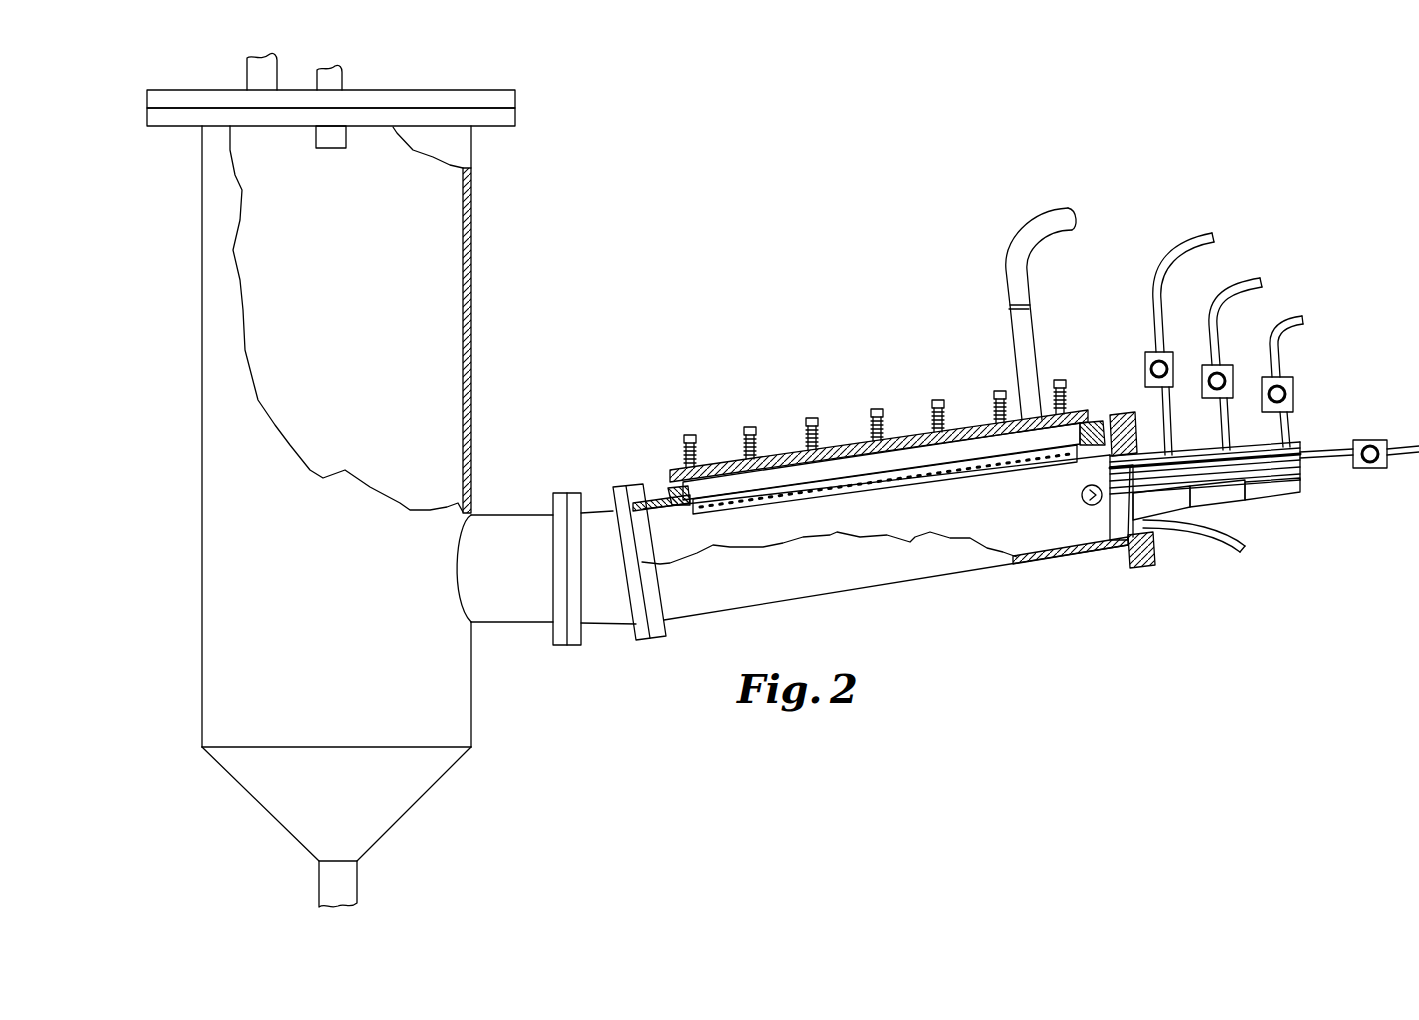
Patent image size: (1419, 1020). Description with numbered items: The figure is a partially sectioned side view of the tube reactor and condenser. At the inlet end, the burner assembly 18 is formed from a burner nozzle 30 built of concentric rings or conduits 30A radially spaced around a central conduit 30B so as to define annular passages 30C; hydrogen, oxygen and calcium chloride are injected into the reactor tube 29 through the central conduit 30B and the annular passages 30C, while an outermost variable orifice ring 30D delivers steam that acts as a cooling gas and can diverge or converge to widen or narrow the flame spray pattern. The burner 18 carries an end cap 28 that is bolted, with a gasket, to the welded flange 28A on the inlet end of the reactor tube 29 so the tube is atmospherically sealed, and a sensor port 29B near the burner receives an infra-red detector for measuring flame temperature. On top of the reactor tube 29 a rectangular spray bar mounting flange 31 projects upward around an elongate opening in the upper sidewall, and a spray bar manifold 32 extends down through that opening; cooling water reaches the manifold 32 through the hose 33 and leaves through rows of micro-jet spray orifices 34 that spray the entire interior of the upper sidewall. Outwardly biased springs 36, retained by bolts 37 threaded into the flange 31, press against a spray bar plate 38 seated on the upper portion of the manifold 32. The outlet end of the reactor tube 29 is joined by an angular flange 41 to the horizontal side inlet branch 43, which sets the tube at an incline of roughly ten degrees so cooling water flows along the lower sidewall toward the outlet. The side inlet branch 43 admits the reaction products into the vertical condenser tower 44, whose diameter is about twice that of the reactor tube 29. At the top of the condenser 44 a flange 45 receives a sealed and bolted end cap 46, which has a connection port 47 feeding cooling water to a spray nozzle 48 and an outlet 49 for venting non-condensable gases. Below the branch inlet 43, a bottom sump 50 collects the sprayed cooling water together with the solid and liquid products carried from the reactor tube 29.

The burner assembly 18 is at (1192, 510).
The end cap 28 is at (1125, 413).
The welded flange 28A is at (1140, 567).
The reactor tube 29 is at (920, 520).
The sensor port 29B is at (1083, 498).
The burner nozzle 30 is at (1123, 498).
The concentric rings 30A is at (1300, 453).
The central conduit 30B is at (1348, 460).
The annular passages 30C is at (1243, 453).
The outermost ring 30D is at (1110, 468).
The spray bar mounting flange 31 is at (668, 497).
The spray bar manifold 32 is at (785, 470).
The hose 33 is at (1037, 237).
The spray-jet orifices 34 is at (906, 470).
The springs 36 is at (940, 420).
The bolts 37 is at (681, 434).
The spray bar plate 38 is at (723, 480).
The angular flange 41 is at (595, 627).
The side inlet branch 43 is at (518, 593).
The condenser tower 44 is at (423, 405).
The flange 45 is at (477, 113).
The end cap 46 is at (480, 98).
The connection port 47 is at (330, 80).
The nozzle 48 is at (331, 137).
The outlet 49 is at (262, 73).
The bottom sump 50 is at (379, 814).